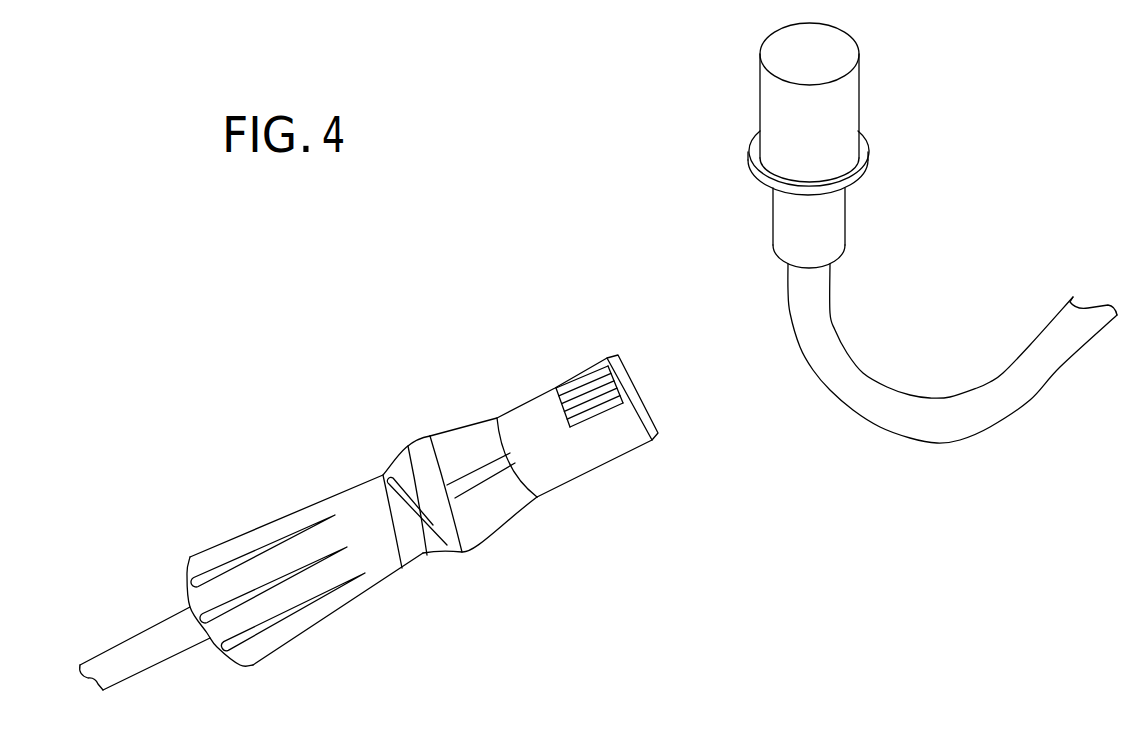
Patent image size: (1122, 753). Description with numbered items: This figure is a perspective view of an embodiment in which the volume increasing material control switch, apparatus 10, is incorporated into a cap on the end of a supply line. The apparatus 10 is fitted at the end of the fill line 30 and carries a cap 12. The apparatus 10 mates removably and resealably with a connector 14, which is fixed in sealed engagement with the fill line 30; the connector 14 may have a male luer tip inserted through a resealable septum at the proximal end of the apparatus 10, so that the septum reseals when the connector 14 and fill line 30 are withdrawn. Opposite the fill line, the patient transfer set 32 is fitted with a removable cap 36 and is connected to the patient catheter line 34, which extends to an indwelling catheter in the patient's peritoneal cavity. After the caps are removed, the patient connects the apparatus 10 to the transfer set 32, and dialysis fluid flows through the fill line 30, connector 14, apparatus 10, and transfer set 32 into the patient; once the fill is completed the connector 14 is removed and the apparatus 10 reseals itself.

The apparatus 10 is at (740, 175).
The cap 12 is at (859, 102).
The connector 14 is at (845, 223).
The fill line 30 is at (1052, 385).
The patient transfer set 32 is at (332, 486).
The patient catheter line 34 is at (133, 672).
The removable cap 36 is at (527, 397).